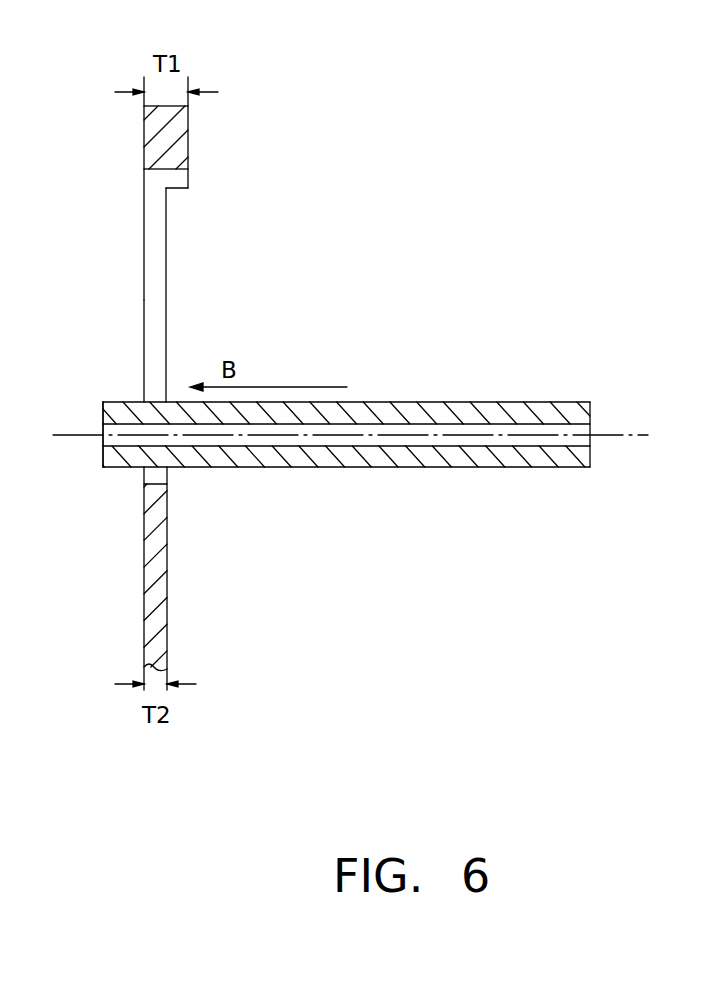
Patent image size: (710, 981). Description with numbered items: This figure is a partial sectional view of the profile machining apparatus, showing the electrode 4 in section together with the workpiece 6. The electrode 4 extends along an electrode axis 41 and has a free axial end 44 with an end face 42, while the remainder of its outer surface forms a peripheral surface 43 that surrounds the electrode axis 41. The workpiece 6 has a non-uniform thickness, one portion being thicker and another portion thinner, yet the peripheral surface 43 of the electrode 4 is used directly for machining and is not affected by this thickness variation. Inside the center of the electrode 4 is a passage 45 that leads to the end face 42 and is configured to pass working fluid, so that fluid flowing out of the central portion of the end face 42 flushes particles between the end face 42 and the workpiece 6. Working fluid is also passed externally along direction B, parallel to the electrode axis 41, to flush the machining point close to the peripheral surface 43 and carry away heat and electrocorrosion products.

The electrode 4 is at (296, 354).
The workpiece 6 is at (178, 148).
The electrode axis 41 is at (620, 434).
The end face 42 is at (103, 426).
The peripheral surface 43 is at (410, 402).
The free axial end 44 is at (118, 386).
The passage 45 is at (513, 430).